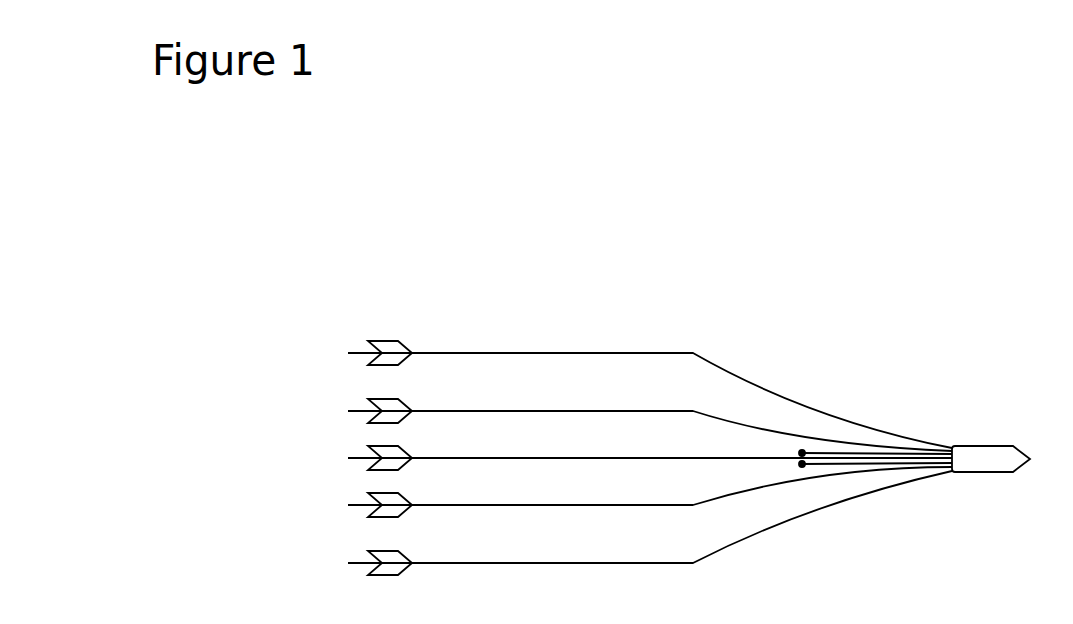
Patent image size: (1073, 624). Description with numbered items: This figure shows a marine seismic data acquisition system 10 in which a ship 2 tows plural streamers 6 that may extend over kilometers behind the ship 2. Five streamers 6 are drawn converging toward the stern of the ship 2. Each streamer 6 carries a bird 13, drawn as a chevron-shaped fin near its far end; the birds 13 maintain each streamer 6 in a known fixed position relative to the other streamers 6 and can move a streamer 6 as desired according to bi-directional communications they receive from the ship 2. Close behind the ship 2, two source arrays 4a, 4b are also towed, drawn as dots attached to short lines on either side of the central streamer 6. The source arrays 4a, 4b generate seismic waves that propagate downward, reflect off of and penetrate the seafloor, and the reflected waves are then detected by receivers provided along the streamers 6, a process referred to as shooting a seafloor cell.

The data acquisition system 10 is at (512, 262).
The bird 13 is at (403, 342).
The streamer 6 is at (477, 353).
The source array 4a is at (802, 453).
The source array 4b is at (802, 464).
The ship 2 is at (988, 446).